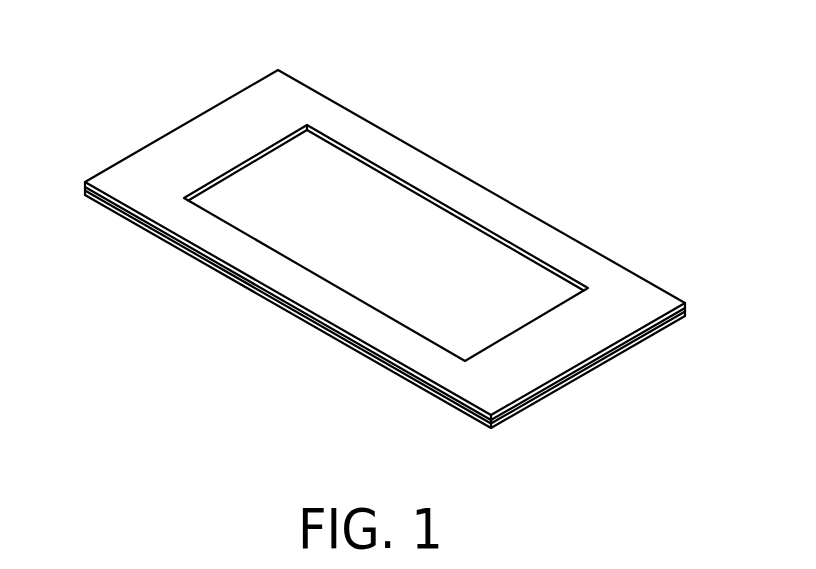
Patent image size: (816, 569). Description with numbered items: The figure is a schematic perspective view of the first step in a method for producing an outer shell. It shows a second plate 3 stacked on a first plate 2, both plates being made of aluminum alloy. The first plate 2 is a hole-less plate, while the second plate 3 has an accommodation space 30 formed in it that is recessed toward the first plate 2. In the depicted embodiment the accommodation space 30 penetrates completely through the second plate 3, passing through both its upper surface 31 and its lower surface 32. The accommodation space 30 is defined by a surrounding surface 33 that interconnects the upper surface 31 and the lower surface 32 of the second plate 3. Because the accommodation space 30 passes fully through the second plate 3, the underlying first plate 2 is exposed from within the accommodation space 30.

The first plate 2 is at (565, 389).
The second plate 3 is at (372, 221).
The accommodation space 30 is at (386, 188).
The upper surface 31 is at (180, 140).
The lower surface 32 is at (122, 213).
The surrounding surface 33 is at (273, 147).